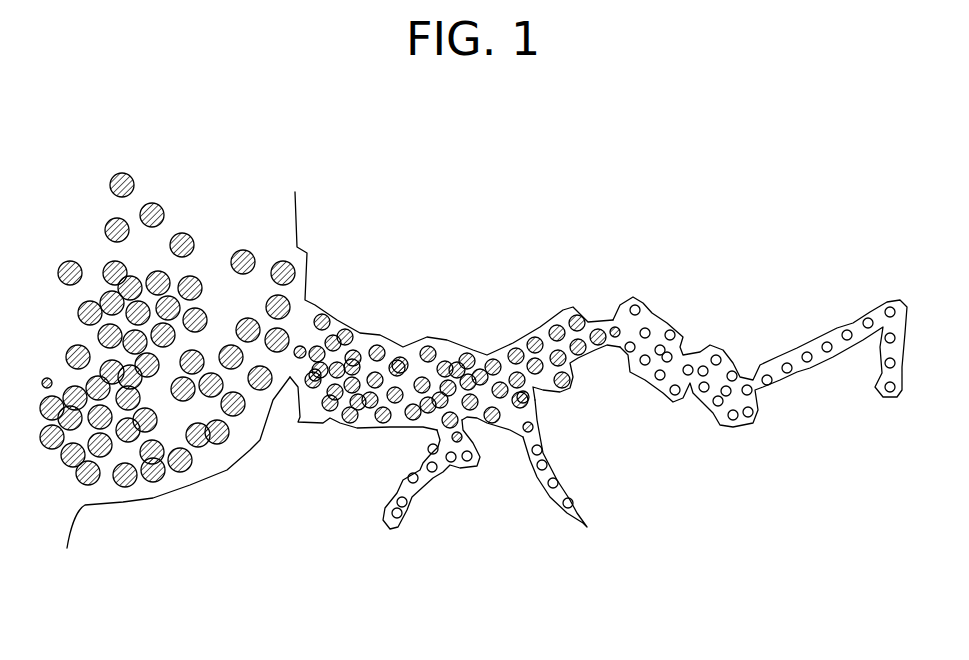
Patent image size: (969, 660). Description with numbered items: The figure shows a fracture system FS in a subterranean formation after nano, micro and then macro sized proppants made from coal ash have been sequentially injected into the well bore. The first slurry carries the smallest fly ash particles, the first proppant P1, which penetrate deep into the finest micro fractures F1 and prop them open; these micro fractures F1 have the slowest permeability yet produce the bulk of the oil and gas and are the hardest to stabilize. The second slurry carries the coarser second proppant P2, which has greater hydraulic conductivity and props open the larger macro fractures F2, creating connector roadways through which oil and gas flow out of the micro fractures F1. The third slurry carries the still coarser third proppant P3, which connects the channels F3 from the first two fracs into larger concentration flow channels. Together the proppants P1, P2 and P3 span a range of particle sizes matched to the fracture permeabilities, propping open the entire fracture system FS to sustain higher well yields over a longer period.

The fracture system FS is at (530, 193).
The micro fractures F1 is at (795, 348).
The macro fractures F2 is at (380, 335).
The channels F3 is at (153, 503).
The first proppant P1 is at (423, 465).
The second proppant P2 is at (473, 350).
The third proppant P3 is at (200, 447).